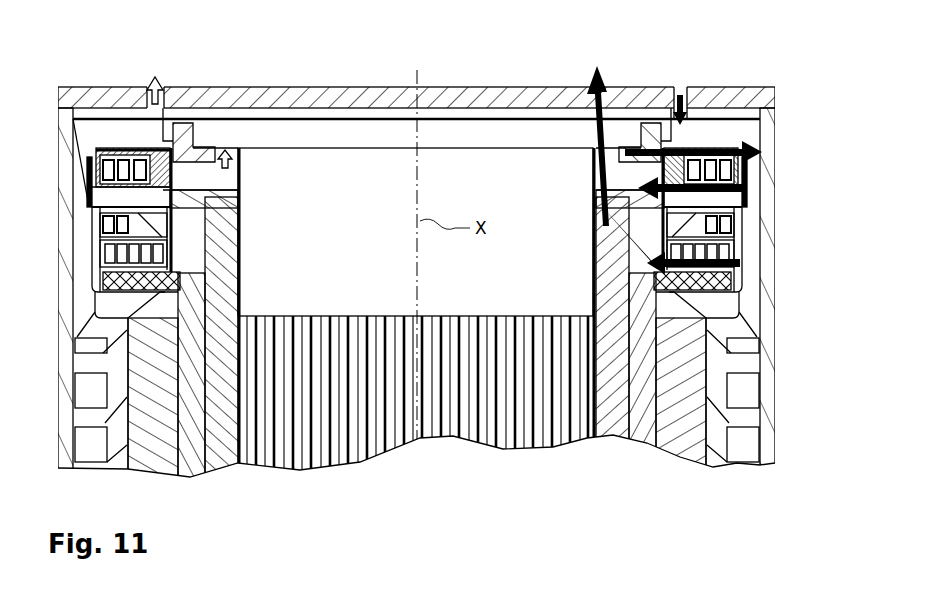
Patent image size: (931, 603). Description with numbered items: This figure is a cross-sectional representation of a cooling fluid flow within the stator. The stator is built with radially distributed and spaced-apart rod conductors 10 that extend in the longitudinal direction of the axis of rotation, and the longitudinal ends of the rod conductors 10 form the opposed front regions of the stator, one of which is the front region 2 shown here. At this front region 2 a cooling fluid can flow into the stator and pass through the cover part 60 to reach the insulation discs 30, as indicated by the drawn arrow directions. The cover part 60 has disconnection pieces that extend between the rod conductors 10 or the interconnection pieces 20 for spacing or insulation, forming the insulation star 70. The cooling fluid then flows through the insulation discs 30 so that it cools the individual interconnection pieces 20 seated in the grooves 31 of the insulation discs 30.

The front region 2 is at (779, 154).
The rod conductor 10 is at (215, 462).
The interconnection piece 20 is at (100, 262).
The insulation disc 30 is at (88, 192).
The groove 31 is at (100, 238).
The cover part 60 is at (132, 147).
The insulation star 70 is at (243, 232).